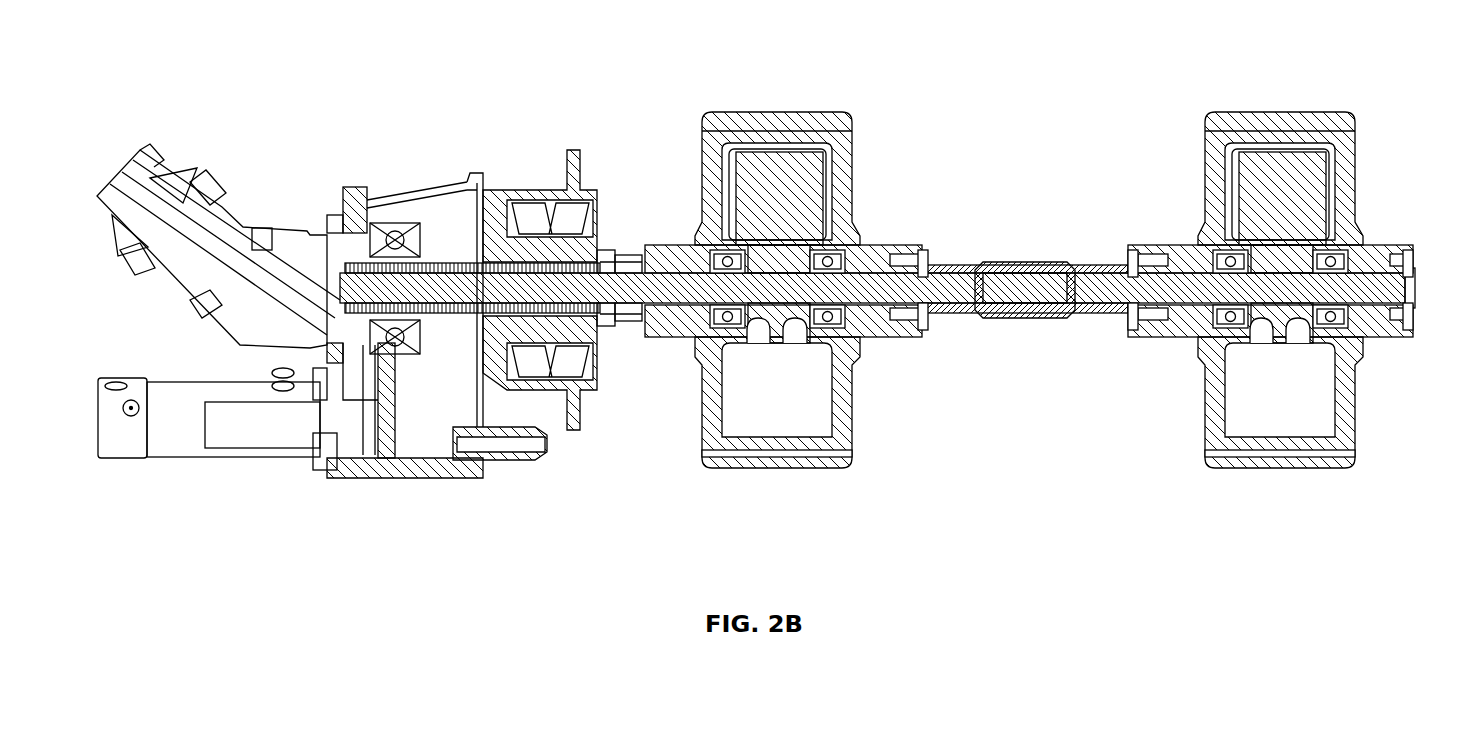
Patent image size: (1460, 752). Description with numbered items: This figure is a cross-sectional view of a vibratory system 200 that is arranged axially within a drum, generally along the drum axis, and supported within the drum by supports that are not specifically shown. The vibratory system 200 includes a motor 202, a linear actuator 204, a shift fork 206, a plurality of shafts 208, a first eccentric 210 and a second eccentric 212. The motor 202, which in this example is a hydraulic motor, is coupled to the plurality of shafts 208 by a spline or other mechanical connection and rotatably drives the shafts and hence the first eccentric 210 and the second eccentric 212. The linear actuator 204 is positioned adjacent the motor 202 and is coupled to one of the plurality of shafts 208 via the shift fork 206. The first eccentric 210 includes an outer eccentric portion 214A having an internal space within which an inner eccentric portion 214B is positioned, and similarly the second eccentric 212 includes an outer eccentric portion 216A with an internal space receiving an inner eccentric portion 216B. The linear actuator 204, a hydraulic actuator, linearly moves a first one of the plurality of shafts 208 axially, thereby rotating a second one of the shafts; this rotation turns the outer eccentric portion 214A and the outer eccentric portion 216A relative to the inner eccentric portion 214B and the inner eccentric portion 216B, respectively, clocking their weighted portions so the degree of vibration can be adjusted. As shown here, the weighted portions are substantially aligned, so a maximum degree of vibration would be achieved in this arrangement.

The vibratory system 200 is at (220, 70).
The motor 202 is at (222, 223).
The linear actuator 204 is at (192, 442).
The shift fork 206 is at (390, 397).
The plurality of shafts 208 is at (615, 346).
The first eccentric 210 is at (865, 157).
The second eccentric 212 is at (1277, 290).
The outer eccentric portion 214A is at (708, 138).
The inner eccentric portion 214B is at (738, 205).
The outer eccentric portion 216A is at (1239, 290).
The inner eccentric portion 216B is at (1223, 247).